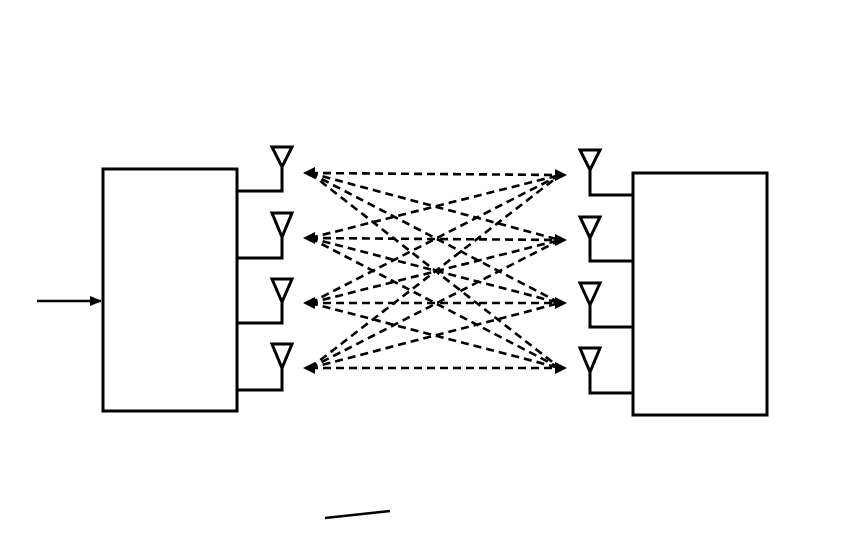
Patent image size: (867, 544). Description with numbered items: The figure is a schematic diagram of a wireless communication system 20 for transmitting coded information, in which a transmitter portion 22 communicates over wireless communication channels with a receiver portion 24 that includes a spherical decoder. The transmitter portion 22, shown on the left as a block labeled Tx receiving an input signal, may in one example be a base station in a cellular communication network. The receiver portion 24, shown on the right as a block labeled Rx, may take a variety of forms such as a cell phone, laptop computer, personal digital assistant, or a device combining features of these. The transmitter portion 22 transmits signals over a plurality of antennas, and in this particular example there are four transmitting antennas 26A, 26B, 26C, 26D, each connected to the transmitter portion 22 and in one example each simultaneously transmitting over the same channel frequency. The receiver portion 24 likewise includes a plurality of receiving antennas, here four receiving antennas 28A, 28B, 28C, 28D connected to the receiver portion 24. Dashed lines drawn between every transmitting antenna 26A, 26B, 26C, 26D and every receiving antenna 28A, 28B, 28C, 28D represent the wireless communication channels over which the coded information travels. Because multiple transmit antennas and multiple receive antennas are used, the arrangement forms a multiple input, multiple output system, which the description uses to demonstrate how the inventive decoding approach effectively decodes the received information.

The wireless communication system 20 is at (594, 92).
The transmitter portion 22 is at (182, 388).
The receiver portion 24 is at (712, 386).
The transmitting antenna 26A is at (280, 147).
The transmitting antenna 26B is at (294, 219).
The transmitting antenna 26C is at (272, 288).
The transmitting antenna 26D is at (270, 355).
The receiving antenna 28A is at (592, 148).
The receiving antenna 28B is at (597, 224).
The receiving antenna 28C is at (597, 293).
The receiving antenna 28D is at (584, 364).